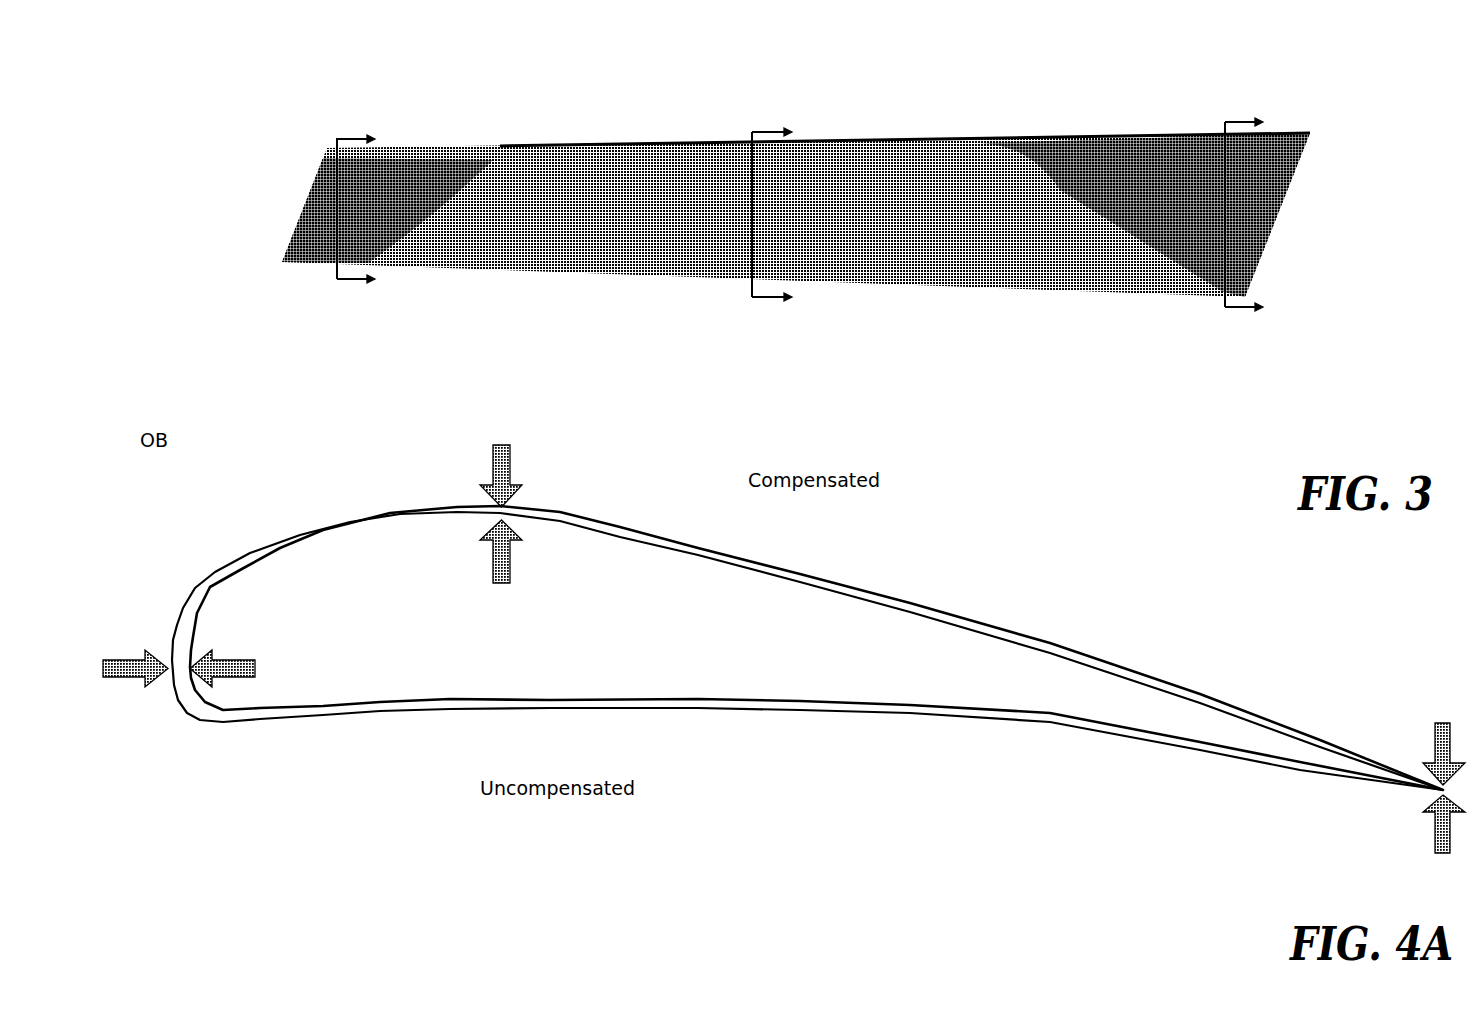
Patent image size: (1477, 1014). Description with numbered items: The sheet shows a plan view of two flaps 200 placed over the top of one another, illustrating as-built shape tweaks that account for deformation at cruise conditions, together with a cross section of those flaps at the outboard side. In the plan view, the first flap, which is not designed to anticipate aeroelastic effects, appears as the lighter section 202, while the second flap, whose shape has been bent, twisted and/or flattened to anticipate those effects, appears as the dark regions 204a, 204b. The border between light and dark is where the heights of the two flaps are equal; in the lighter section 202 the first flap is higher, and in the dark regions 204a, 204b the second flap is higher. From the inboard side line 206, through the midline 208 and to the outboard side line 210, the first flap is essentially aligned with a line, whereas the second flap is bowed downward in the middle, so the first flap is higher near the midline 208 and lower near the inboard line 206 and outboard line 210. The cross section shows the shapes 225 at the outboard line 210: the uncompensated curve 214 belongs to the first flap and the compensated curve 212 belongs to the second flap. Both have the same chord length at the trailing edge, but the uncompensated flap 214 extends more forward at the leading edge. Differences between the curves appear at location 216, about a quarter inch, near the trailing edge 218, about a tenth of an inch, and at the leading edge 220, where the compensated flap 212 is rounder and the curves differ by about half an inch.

In FIG. 3, the wing 200 is at (220, 88).
In FIG. 3, the lighter section 202 is at (796, 215).
In FIG. 3, the dark region 204a is at (317, 223).
In FIG. 3, the dark region 204b is at (1250, 242).
In FIG. 3, the inboard side line 206 is at (1223, 294).
In FIG. 3, the midline 208 is at (750, 236).
In FIG. 3, the outboard side line 210 is at (333, 265).
In FIG. 4A, the compensated cross sectional curve 212 is at (698, 548).
In FIG. 4A, the uncompensated cross sectional curve 214 is at (645, 707).
In FIG. 4A, the location 216 is at (520, 506).
In FIG. 4A, the trailing edge location 218 is at (1432, 792).
In FIG. 4A, the leading edge location 220 is at (180, 678).
In FIG. 4A, the shapes 225 is at (245, 508).